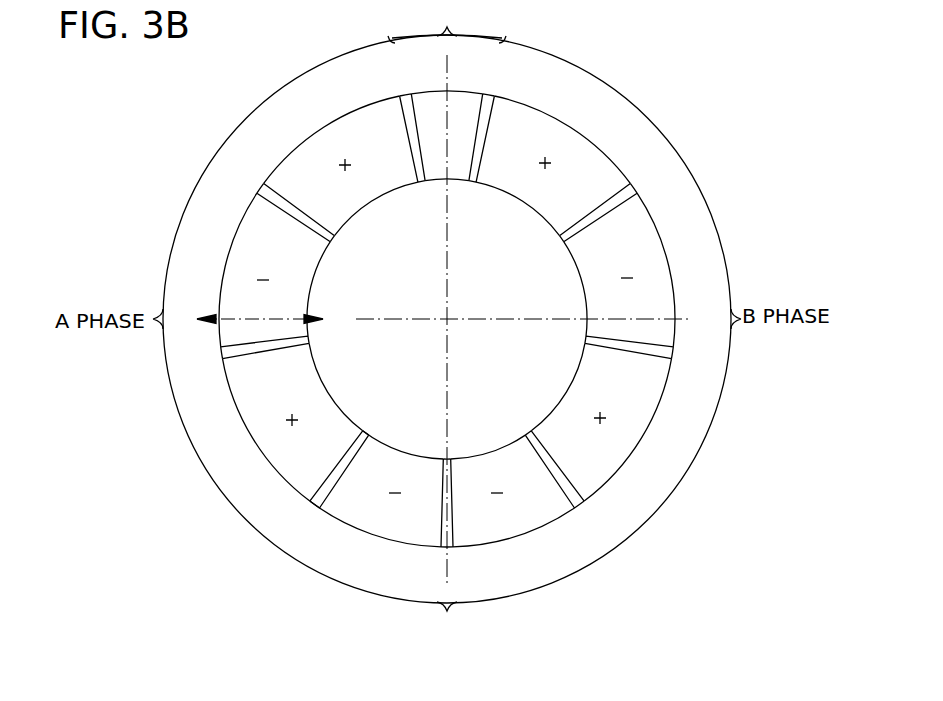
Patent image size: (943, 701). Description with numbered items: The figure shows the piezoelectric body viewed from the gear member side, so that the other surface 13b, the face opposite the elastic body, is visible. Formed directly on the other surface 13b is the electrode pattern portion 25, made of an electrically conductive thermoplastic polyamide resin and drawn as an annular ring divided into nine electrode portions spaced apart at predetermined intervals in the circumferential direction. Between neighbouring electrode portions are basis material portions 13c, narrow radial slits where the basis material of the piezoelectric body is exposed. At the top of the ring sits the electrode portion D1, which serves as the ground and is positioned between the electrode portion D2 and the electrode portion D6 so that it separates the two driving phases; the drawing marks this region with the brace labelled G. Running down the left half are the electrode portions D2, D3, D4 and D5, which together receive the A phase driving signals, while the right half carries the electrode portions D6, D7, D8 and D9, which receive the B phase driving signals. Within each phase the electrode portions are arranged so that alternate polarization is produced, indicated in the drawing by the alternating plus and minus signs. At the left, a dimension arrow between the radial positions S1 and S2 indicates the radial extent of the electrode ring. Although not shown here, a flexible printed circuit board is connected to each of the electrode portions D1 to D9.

The other surface 13b is at (655, 80).
The basis material portion 13c is at (482, 127).
The electrode pattern portion 25 is at (444, 315).
The electrode portion D1 is at (432, 128).
The electrode portion D2 is at (327, 166).
The electrode portion D3 is at (270, 235).
The electrode portion D4 is at (263, 383).
The electrode portion D5 is at (375, 503).
The electrode portion D6 is at (578, 158).
The electrode portion D7 is at (620, 232).
The electrode portion D8 is at (632, 382).
The electrode portion D9 is at (520, 503).
The electrode group G is at (447, 21).
The outer radius position S1 is at (246, 320).
The inner radius position S2 is at (327, 320).